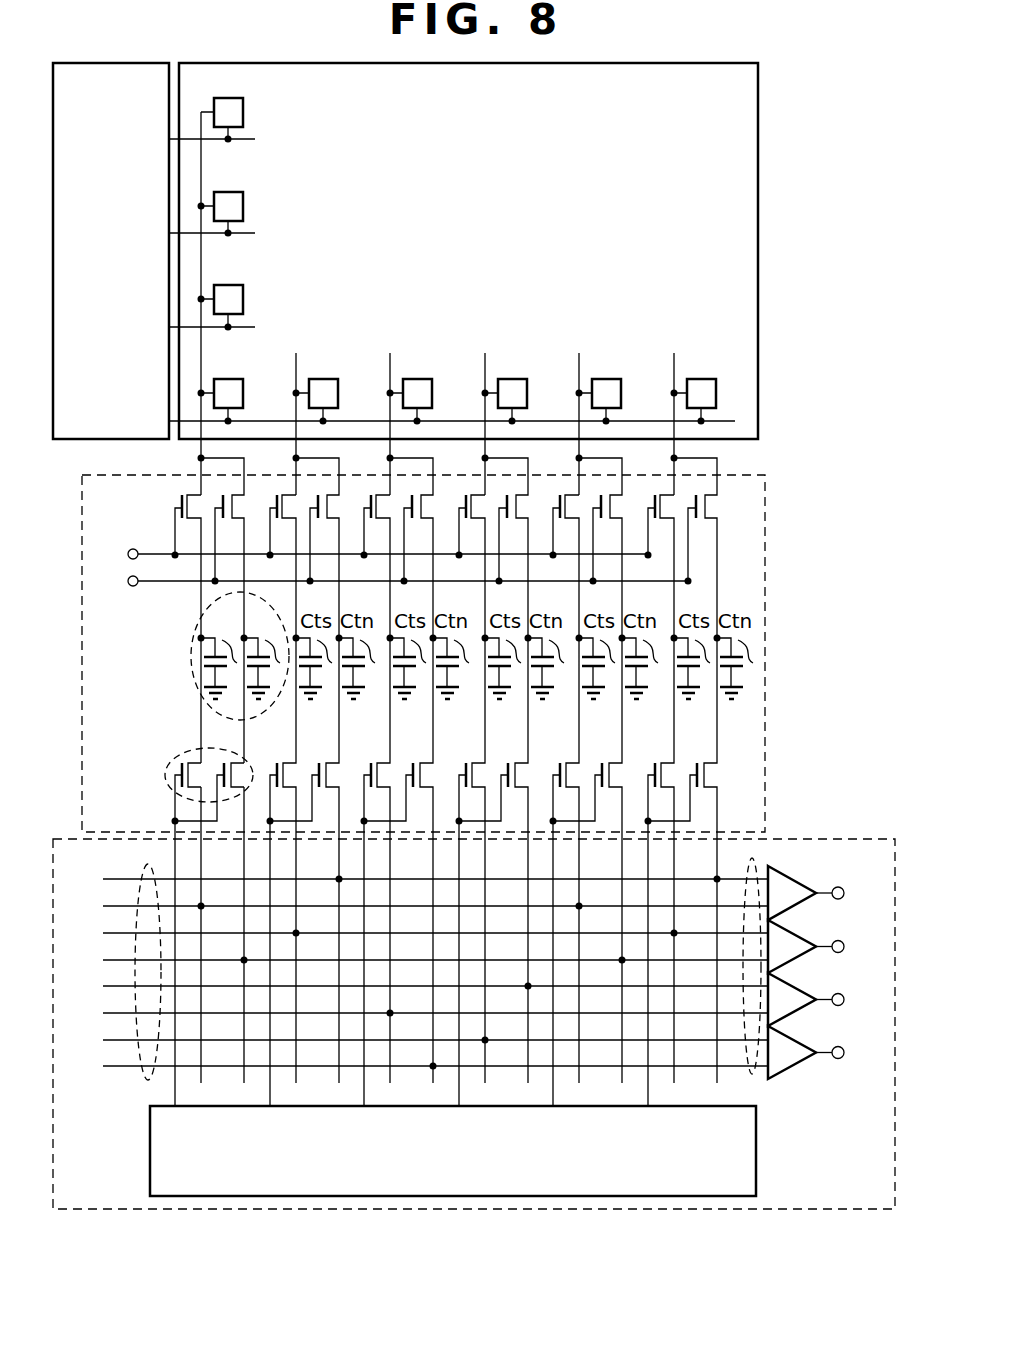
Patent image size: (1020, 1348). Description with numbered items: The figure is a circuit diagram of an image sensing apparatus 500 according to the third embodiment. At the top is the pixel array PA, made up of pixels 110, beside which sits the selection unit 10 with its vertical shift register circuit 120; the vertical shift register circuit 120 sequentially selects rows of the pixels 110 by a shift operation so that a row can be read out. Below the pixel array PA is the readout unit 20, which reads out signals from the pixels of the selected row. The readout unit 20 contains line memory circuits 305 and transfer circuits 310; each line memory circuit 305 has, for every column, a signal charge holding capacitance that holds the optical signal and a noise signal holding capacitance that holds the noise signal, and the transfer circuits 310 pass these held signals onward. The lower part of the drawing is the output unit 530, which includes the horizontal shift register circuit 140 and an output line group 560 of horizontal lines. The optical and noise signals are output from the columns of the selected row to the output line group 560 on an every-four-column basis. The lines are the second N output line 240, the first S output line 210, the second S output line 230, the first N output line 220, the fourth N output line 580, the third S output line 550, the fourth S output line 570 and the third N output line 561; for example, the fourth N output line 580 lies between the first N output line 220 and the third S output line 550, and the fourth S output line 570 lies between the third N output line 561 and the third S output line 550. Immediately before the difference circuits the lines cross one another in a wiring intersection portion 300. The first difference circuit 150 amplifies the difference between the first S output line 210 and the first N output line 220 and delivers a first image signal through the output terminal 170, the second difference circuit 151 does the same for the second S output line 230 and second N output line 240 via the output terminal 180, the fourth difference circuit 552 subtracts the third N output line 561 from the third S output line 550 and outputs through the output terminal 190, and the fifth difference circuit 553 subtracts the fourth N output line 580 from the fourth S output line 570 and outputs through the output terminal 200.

The selection unit 10 is at (113, 27).
The vertical shift register circuit 120 is at (125, 63).
The pixel 110 is at (245, 108).
The pixel array PA is at (681, 63).
The readout unit 20 is at (455, 644).
The line memory circuit 305 is at (191, 668).
The transfer circuit 310 is at (170, 762).
The wiring intersection portion 300 is at (752, 856).
The second N output line 240 is at (124, 879).
The first S output line 210 is at (124, 906).
The second S output line 230 is at (124, 933).
The first N output line 220 is at (124, 960).
The fourth N output line 580 is at (124, 986).
The third S output line 550 is at (124, 1013).
The fourth S output line 570 is at (124, 1040).
The third N output line 561 is at (124, 1066).
The output line group 560 is at (140, 1075).
The first difference circuit 150 is at (800, 884).
The second difference circuit 151 is at (800, 938).
The fourth difference circuit 552 is at (802, 992).
The fifth difference circuit 553 is at (802, 1046).
The output terminal 170 is at (842, 887).
The output terminal 180 is at (842, 940).
The output terminal 190 is at (842, 993).
The output terminal 200 is at (842, 1047).
The horizontal shift register circuit 140 is at (758, 1150).
The image sensing apparatus 500 is at (474, 1029).
The output unit 530 is at (843, 1210).